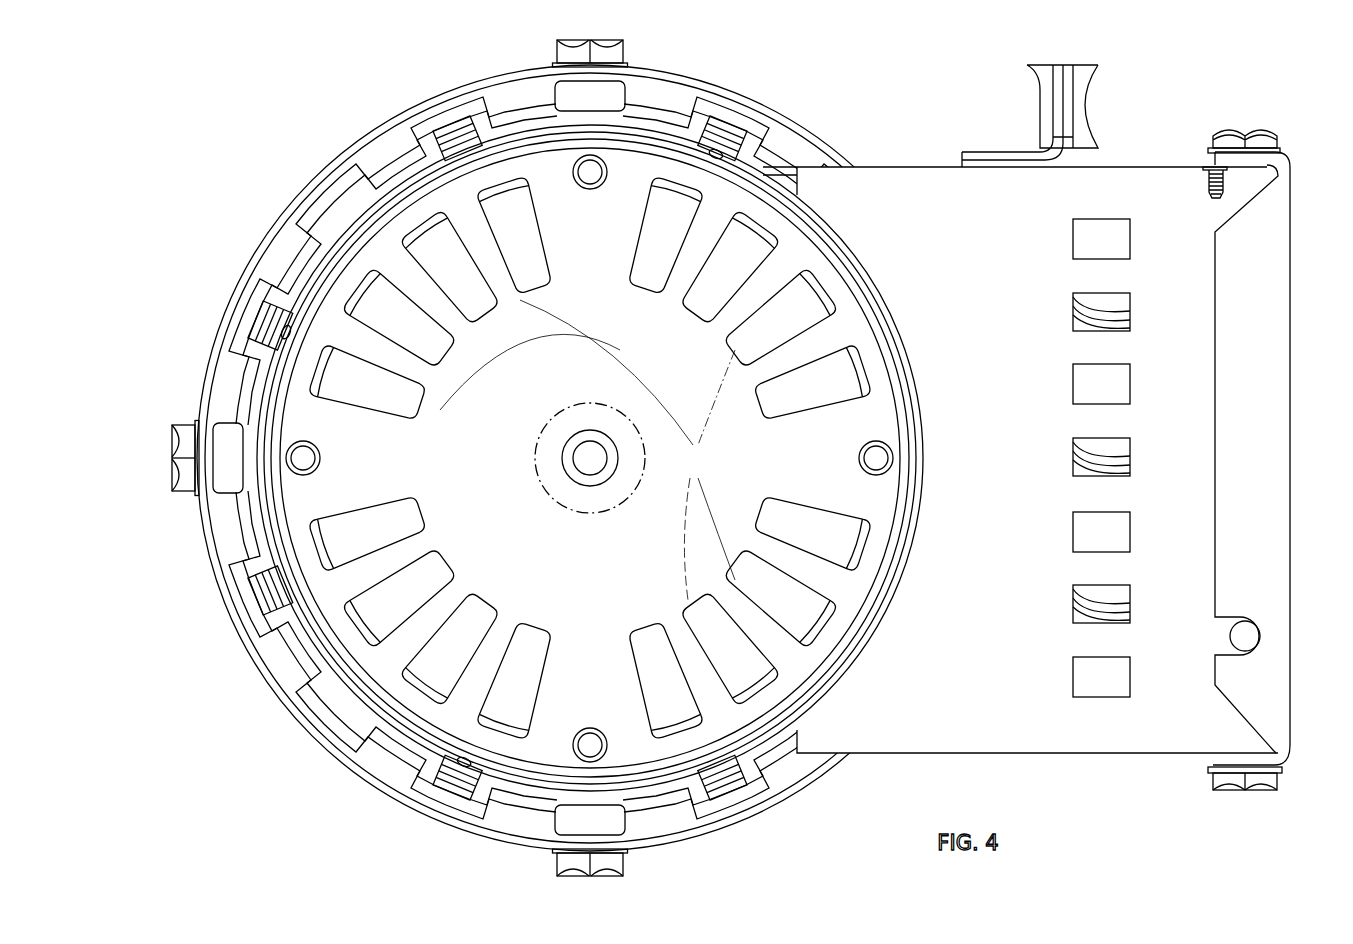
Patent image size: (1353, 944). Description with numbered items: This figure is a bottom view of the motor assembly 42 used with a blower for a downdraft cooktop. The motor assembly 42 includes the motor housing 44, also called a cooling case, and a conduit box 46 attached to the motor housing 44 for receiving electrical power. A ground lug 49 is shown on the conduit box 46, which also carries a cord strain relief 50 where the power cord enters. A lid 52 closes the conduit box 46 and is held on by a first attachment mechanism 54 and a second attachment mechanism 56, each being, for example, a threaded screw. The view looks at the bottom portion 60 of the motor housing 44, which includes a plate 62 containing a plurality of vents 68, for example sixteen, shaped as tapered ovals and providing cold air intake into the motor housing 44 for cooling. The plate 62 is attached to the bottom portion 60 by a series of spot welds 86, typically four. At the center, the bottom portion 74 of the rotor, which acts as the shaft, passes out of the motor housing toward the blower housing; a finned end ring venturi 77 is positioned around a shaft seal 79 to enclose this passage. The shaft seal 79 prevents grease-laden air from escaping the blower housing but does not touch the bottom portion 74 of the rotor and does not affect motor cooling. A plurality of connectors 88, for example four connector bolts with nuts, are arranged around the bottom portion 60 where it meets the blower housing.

The motor assembly 42 is at (844, 92).
The motor housing 44 is at (362, 748).
The conduit box 46 is at (1015, 740).
The ground lug 49 is at (1225, 186).
The cord strain relief 50 is at (1093, 128).
The lid 52 is at (1282, 735).
The first attachment mechanism 54 is at (1212, 130).
The second attachment mechanism 56 is at (1218, 778).
The bottom portion of the motor housing 60 is at (662, 788).
The plate 62 is at (600, 682).
The vents 68 is at (627, 450).
The bottom portion of the rotor 74 is at (588, 460).
The finned end ring venturi 77 is at (440, 410).
The shaft seal 79 is at (565, 474).
The spot welds 86 is at (712, 152).
The connectors 88 is at (590, 172).